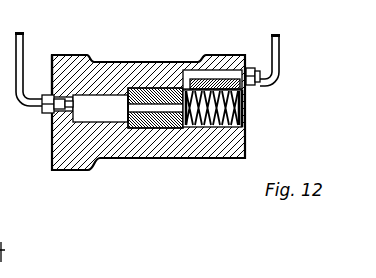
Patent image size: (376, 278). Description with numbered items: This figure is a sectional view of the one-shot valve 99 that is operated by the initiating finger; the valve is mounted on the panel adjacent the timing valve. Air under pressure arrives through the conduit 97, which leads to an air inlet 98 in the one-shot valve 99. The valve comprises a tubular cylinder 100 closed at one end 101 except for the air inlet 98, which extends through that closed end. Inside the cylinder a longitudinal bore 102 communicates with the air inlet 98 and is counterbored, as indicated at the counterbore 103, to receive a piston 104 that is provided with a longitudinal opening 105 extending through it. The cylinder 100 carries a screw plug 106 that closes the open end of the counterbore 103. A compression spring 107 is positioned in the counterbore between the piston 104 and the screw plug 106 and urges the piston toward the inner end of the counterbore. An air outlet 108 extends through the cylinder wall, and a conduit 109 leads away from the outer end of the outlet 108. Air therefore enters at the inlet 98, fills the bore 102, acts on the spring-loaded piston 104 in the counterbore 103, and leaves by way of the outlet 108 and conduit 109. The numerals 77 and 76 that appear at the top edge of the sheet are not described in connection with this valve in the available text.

The conduit 97 is at (19, 32).
The air inlet 98 is at (49, 111).
The one-shot valve 99 is at (176, 160).
The tubular cylinder 100 is at (123, 62).
The closed end 101 is at (50, 80).
The longitudinal bore 102 is at (78, 113).
The counterbore 103 is at (152, 128).
The piston 104 is at (155, 88).
The longitudinal opening 105 is at (116, 121).
The screw plug 106 is at (241, 97).
The compression spring 107 is at (246, 122).
The air outlet 108 is at (222, 80).
The conduit 109 is at (280, 43).
The partial numeral from adjacent figure 77 is at (183, 6).
The partial numeral from adjacent figure 76 is at (222, 0).